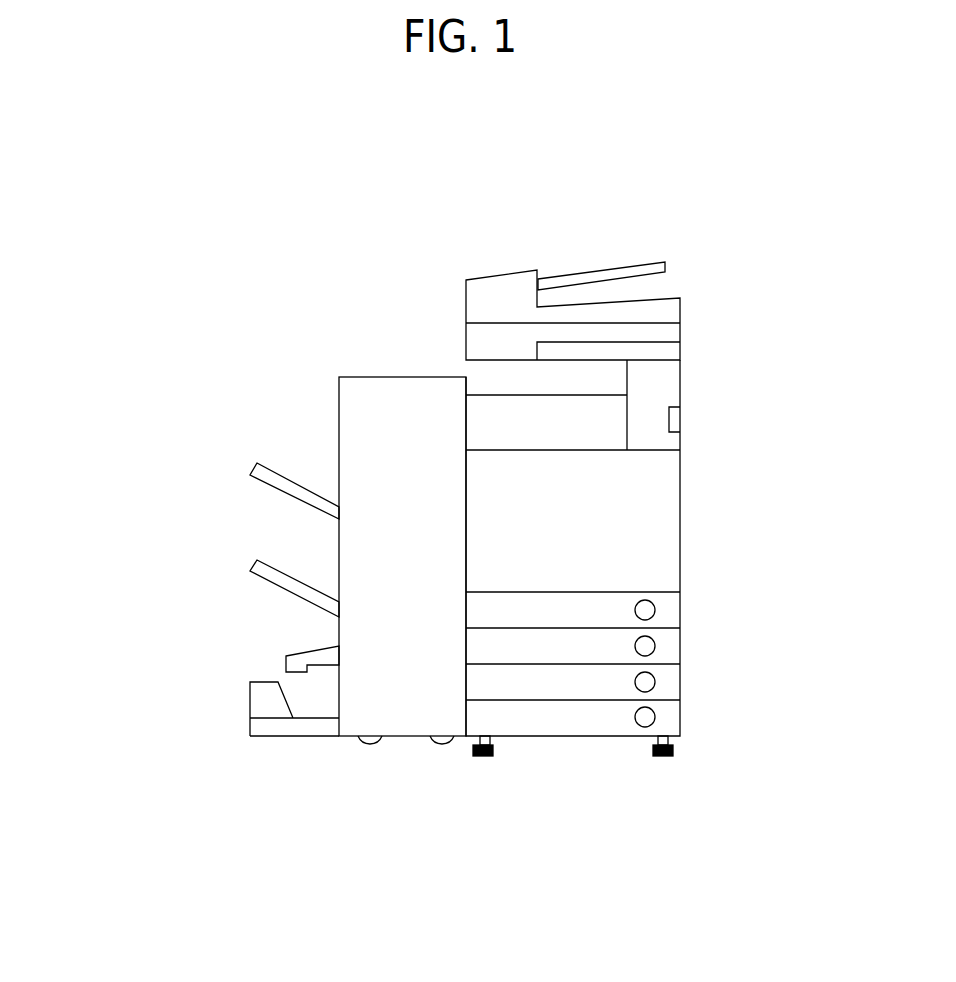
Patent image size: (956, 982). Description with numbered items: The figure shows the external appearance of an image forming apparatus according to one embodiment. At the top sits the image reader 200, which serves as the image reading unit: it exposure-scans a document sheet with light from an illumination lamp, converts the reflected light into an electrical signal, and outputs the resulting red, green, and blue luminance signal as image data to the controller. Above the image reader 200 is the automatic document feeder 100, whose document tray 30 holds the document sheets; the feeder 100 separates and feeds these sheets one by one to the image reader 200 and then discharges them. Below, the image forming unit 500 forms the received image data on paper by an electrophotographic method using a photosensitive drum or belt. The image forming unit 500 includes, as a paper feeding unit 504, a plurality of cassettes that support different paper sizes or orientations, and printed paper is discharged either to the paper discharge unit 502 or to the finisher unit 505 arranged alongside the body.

The document tray 30 is at (667, 262).
The automatic document feeder 100 is at (452, 252).
The image reader 200 is at (680, 342).
The image forming unit 500 is at (820, 360).
The paper discharge unit 502 is at (257, 562).
The paper feeding unit 504 is at (573, 700).
The finisher unit 505 is at (379, 453).